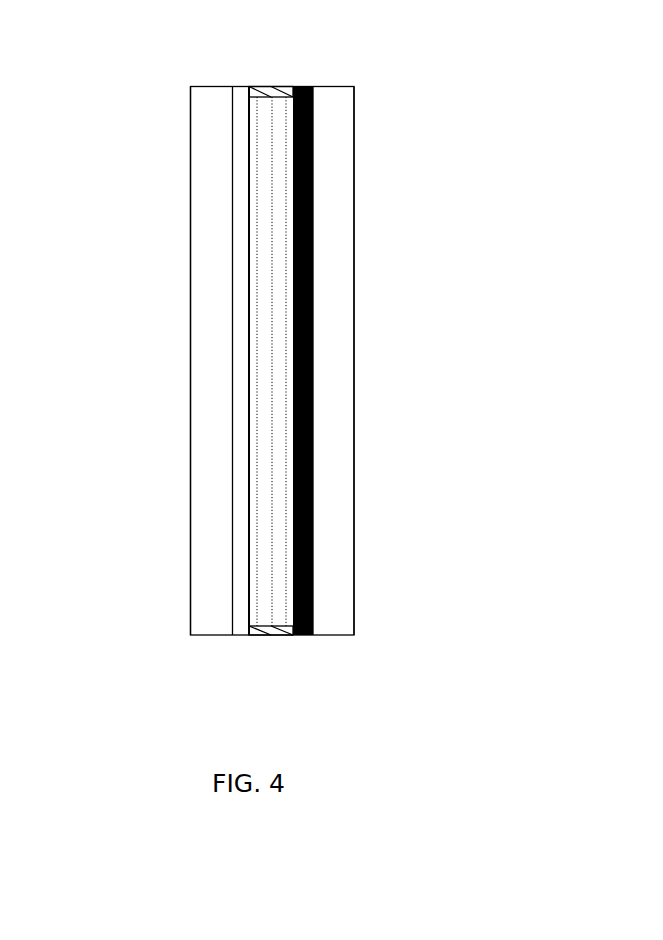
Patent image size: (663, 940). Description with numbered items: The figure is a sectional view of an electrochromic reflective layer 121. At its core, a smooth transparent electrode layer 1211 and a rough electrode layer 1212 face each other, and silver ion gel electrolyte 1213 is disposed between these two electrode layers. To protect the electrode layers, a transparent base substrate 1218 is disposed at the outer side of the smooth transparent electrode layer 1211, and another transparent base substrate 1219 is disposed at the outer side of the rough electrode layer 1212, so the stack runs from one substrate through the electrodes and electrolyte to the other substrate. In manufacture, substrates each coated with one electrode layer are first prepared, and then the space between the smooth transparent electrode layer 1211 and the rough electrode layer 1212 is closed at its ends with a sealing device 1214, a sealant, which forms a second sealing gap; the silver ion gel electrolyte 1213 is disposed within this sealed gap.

The electrochromic reflective layer 121 is at (120, 240).
The smooth transparent electrode layer 1211 is at (240, 100).
The rough electrode layer 1212 is at (307, 86).
The silver ion gel electrolyte 1213 is at (272, 218).
The sealing device 1214 is at (270, 633).
The transparent base substrate 1218 is at (200, 362).
The transparent base substrate 1219 is at (343, 361).